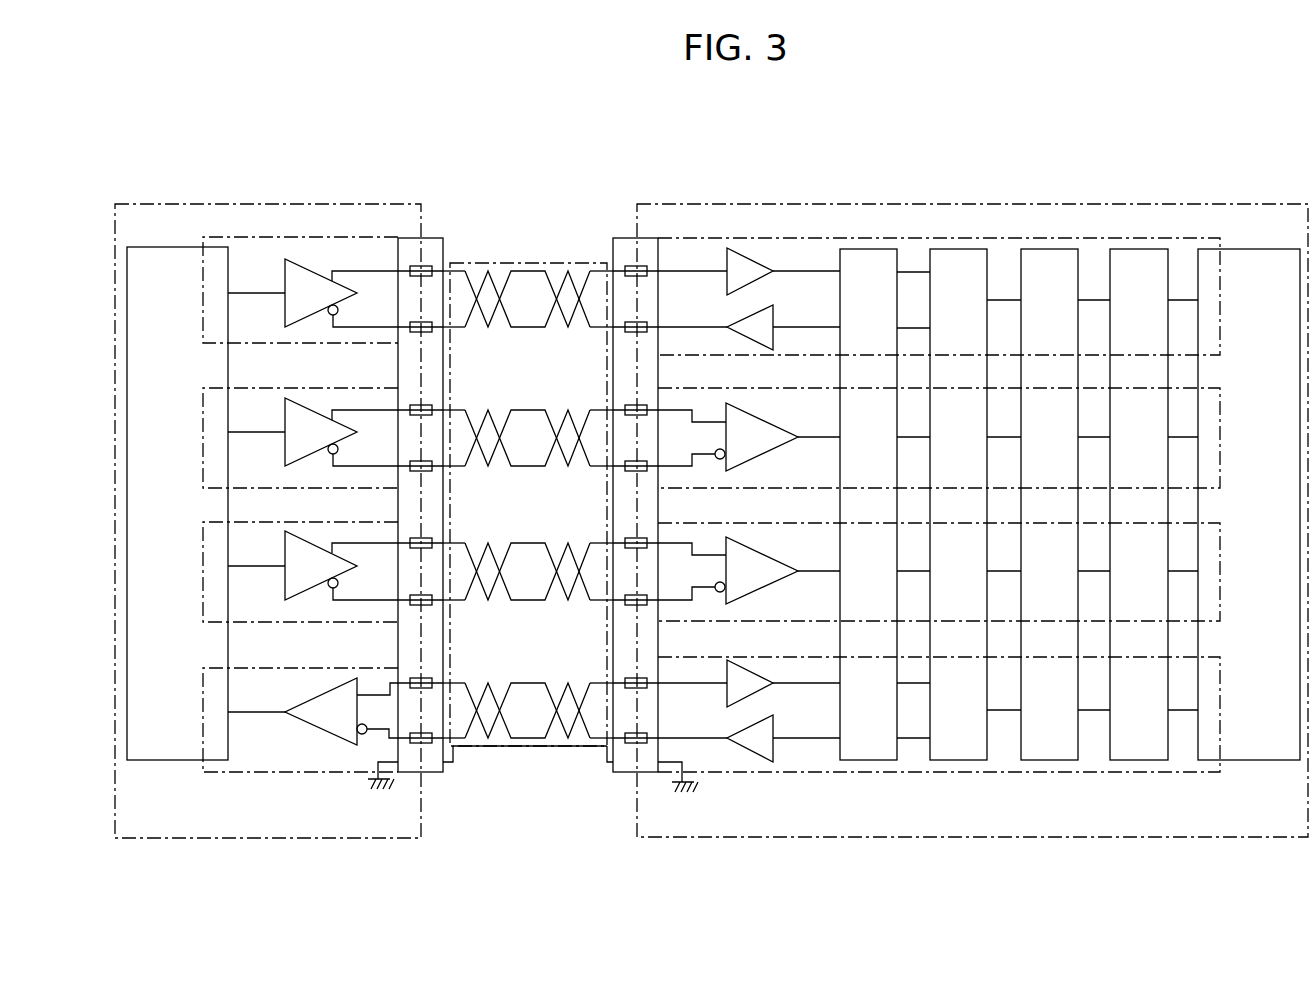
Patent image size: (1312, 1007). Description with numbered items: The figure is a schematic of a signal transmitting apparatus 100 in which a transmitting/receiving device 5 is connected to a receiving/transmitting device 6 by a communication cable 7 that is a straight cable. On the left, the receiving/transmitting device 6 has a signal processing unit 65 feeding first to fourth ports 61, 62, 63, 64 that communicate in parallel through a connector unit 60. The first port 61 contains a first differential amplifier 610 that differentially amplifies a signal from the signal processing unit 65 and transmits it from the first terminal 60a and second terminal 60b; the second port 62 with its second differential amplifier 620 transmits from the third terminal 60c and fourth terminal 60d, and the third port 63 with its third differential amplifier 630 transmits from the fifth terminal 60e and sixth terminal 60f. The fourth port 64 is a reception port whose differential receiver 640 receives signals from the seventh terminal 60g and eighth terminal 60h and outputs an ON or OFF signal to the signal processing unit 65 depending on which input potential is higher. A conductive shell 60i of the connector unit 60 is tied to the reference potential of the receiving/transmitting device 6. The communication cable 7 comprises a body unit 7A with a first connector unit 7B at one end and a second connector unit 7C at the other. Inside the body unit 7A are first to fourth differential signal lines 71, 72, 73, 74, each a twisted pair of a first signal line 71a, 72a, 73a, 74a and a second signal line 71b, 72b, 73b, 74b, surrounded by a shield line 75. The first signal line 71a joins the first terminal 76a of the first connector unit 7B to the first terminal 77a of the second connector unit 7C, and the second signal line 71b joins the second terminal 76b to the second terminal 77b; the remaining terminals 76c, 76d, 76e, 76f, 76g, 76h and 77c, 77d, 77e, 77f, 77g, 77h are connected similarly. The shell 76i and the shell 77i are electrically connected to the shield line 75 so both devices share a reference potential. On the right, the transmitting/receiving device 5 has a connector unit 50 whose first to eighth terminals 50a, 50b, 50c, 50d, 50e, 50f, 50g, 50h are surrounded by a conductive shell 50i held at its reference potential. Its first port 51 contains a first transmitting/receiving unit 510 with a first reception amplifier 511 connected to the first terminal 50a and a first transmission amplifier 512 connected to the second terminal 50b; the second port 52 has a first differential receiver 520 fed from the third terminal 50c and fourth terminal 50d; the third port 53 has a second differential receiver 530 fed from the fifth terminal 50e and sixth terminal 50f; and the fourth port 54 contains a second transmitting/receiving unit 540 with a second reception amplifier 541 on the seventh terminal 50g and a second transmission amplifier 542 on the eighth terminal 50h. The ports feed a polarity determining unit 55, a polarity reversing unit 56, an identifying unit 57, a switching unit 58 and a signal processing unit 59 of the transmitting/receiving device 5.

The signal transmitting apparatus 100 is at (1131, 116).
The transmitting/receiving device 5 is at (1295, 204).
The receiving/transmitting device 6 is at (135, 203).
The communication cable 7 is at (620, 108).
The body unit 7A is at (542, 173).
The first connector unit 7B is at (613, 172).
The second connector unit 7C is at (443, 172).
The connector unit 50 is at (651, 222).
The first terminal 50a is at (652, 266).
The second terminal 50b is at (652, 323).
The third terminal 50c is at (650, 403).
The fourth terminal 50d is at (650, 460).
The fifth terminal 50e is at (650, 536).
The sixth terminal 50f is at (650, 593).
The seventh terminal 50g is at (652, 680).
The eighth terminal 50h is at (650, 733).
The conductive shell 50i is at (650, 773).
The first port 51 is at (752, 237).
The second port 52 is at (752, 387).
The third port 53 is at (752, 522).
The fourth port 54 is at (752, 656).
The polarity determining unit 55 is at (870, 248).
The polarity reversing unit 56 is at (960, 248).
The identifying unit 57 is at (1049, 248).
The switching unit 58 is at (1142, 248).
The signal processing unit 59 is at (1252, 248).
The connector unit 60 is at (407, 222).
The first terminal 60a is at (410, 266).
The second terminal 60b is at (410, 322).
The third terminal 60c is at (410, 405).
The fourth terminal 60d is at (410, 461).
The fifth terminal 60e is at (410, 538).
The sixth terminal 60f is at (410, 595).
The seventh terminal 60g is at (410, 678).
The eighth terminal 60h is at (410, 733).
The conductive shell 60i is at (408, 773).
The first port 61 is at (252, 237).
The second port 62 is at (252, 388).
The third port 63 is at (252, 522).
The fourth port 64 is at (254, 668).
The signal processing unit 65 is at (175, 247).
The first differential signal line 71 is at (549, 193).
The first signal line 71a is at (472, 268).
The second signal line 71b is at (488, 268).
The second differential signal line 72 is at (544, 345).
The first signal line 72a is at (475, 408).
The second signal line 72b is at (490, 408).
The third differential signal line 73 is at (544, 483).
The first signal line 73a is at (475, 543).
The second signal line 73b is at (490, 543).
The fourth differential signal line 74 is at (544, 622).
The first signal line 74a is at (468, 683).
The second signal line 74b is at (490, 683).
The shield line 75 is at (531, 748).
The first terminal 76a is at (614, 268).
The second terminal 76b is at (614, 331).
The third terminal 76c is at (620, 405).
The fourth terminal 76d is at (620, 470).
The fifth terminal 76e is at (620, 541).
The sixth terminal 76f is at (612, 604).
The seventh terminal 76g is at (618, 678).
The eighth terminal 76h is at (615, 772).
The conductive shell 76i is at (612, 769).
The first terminal 77a is at (438, 266).
The second terminal 77b is at (444, 332).
The third terminal 77c is at (431, 393).
The fourth terminal 77d is at (443, 470).
The fifth terminal 77e is at (431, 533).
The sixth terminal 77f is at (443, 606).
The seventh terminal 77g is at (431, 668).
The eighth terminal 77h is at (442, 772).
The conductive shell 77i is at (445, 769).
The first transmitting/receiving unit 510 is at (719, 237).
The first reception amplifier 511 is at (757, 259).
The first transmission amplifier 512 is at (775, 317).
The first differential receiver 520 is at (757, 416).
The second differential receiver 530 is at (757, 551).
The second transmitting/receiving unit 540 is at (741, 765).
The second reception amplifier 541 is at (757, 680).
The second transmission amplifier 542 is at (775, 727).
The first differential amplifier 610 is at (285, 275).
The second differential amplifier 620 is at (285, 425).
The third differential amplifier 630 is at (285, 558).
The differential receiver 640 is at (306, 698).